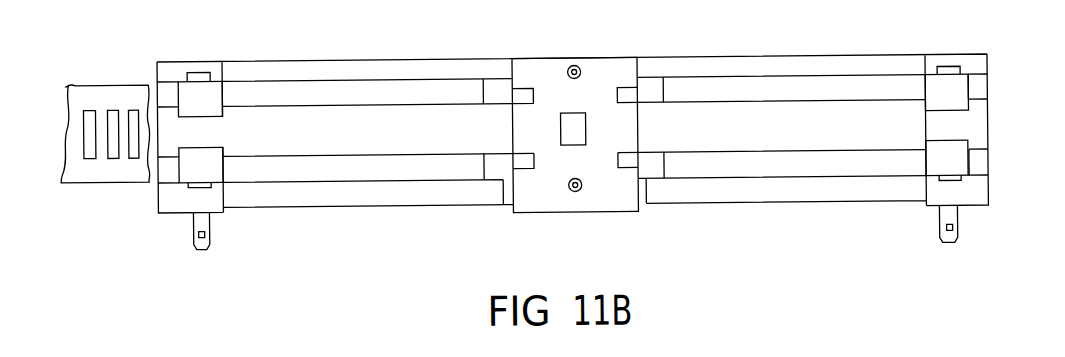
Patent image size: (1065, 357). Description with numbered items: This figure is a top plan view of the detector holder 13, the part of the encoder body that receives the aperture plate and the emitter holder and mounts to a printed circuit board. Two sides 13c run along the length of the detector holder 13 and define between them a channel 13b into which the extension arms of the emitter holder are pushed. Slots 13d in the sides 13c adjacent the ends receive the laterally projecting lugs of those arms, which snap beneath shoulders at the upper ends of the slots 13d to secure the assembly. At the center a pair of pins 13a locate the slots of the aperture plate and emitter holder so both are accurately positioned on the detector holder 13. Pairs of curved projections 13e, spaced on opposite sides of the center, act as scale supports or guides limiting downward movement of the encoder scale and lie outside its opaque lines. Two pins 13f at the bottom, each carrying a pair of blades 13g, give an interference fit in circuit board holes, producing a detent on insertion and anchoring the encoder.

The detector holder 13 is at (863, 213).
The pins 13a is at (580, 72).
The channel 13b is at (315, 120).
The sides 13c is at (264, 70).
The slots 13d is at (950, 82).
The curved projections 13e is at (493, 161).
The pins 13f is at (208, 223).
The blades 13g is at (207, 239).